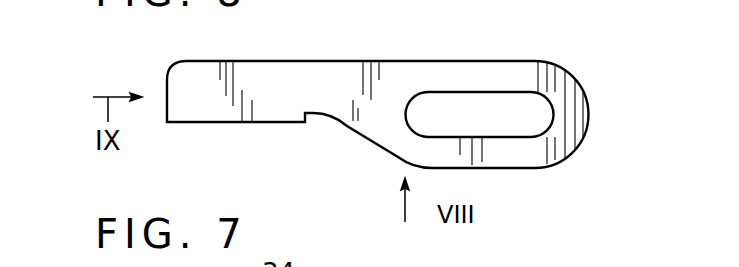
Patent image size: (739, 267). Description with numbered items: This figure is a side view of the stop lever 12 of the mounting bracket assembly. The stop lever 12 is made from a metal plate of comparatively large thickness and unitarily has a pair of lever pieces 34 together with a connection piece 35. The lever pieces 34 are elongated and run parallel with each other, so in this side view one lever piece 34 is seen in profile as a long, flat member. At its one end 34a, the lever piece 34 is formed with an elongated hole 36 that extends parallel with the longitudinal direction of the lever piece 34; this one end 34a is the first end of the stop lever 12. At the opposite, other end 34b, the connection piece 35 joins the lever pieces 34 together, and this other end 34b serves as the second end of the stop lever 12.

The stop lever 12 is at (588, 82).
The lever piece 34 is at (354, 60).
The one end of the lever piece 34a is at (529, 155).
The other end of the lever piece 34b is at (240, 107).
The connection piece 35 is at (283, 122).
The elongated hole 36 is at (492, 94).